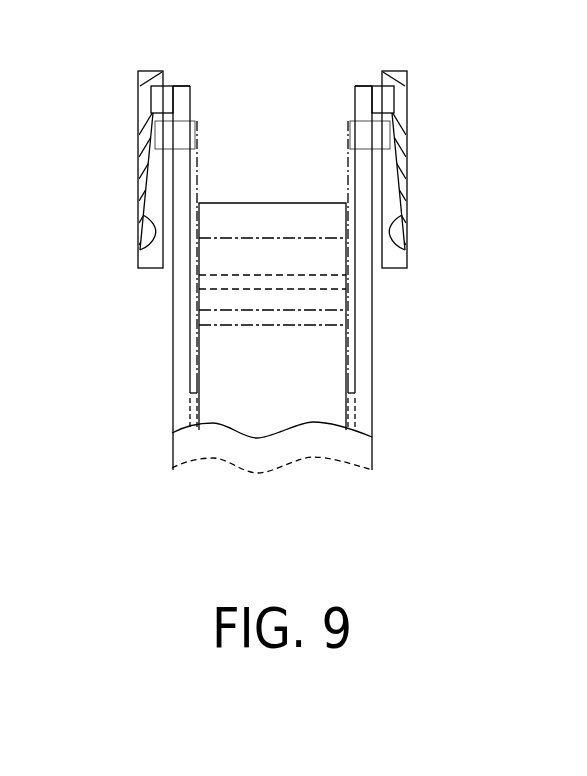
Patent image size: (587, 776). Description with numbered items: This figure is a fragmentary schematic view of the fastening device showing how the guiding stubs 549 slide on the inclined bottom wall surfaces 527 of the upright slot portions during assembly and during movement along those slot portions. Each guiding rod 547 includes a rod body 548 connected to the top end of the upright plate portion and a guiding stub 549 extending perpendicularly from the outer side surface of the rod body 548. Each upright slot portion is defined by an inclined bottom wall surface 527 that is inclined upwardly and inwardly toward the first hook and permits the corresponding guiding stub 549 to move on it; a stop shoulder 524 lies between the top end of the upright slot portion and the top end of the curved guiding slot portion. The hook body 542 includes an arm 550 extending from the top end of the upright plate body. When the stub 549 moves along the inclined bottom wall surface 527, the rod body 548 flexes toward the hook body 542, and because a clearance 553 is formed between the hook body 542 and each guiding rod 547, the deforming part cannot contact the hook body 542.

The hook body 542 is at (273, 192).
The guiding rod 547 is at (183, 81).
The rod body 548 is at (190, 100).
The guiding stub 549 is at (160, 95).
The stop shoulder 524 is at (140, 125).
The inclined bottom wall surface 527 is at (146, 240).
The arm 550 is at (245, 348).
The clearance 553 is at (190, 381).